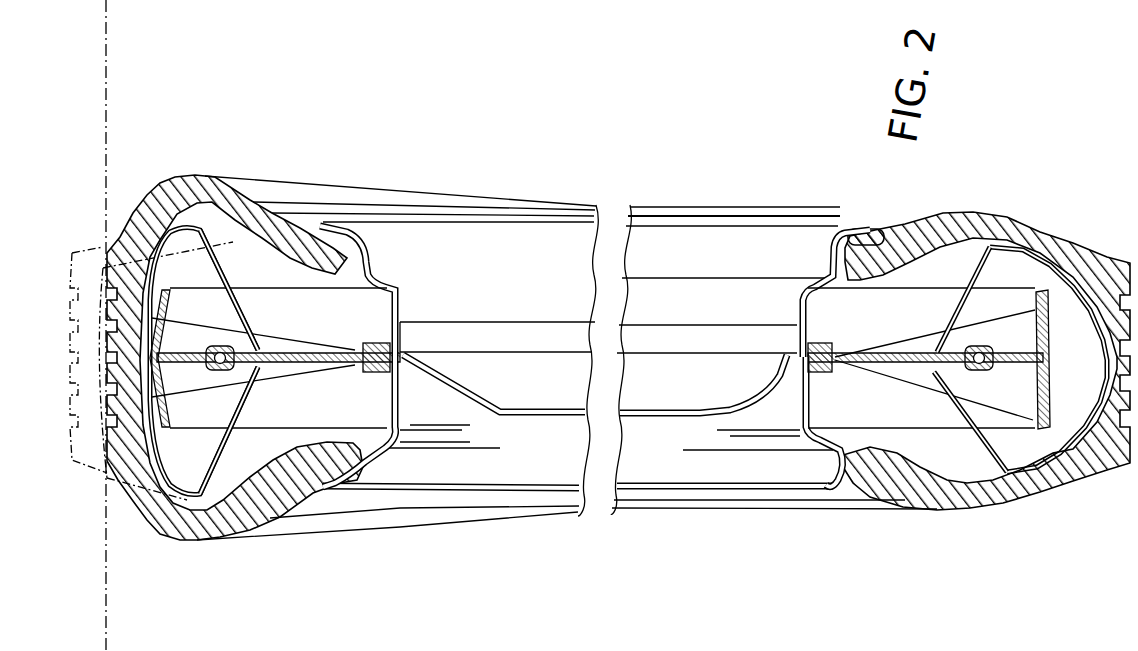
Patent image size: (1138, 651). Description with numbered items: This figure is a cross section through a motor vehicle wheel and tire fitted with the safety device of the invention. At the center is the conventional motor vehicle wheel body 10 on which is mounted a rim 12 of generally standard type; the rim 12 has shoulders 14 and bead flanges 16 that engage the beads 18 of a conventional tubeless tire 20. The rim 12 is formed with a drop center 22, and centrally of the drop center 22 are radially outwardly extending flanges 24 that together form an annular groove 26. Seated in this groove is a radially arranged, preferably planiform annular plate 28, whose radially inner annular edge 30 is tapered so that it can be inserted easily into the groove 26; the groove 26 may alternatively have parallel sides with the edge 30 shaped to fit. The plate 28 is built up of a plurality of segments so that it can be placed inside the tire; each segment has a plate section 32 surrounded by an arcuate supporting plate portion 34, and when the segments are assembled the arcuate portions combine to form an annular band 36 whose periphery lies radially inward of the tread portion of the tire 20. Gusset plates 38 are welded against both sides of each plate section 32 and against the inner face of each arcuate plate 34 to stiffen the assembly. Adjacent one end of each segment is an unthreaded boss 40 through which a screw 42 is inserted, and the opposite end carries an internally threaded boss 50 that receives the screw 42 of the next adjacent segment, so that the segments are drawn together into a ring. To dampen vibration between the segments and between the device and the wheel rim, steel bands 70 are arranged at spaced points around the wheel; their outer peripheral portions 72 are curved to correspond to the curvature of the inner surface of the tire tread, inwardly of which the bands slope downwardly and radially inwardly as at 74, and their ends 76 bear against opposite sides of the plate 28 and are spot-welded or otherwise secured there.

The motor vehicle wheel body 10 is at (716, 398).
The rim 12 is at (803, 395).
The shoulders 14 is at (824, 465).
The bead flanges 16 is at (873, 482).
The beads 18 is at (868, 240).
The tubeless tire 20 is at (1002, 503).
The drop center 22 is at (860, 372).
The flanges 24 is at (385, 332).
The annular groove 26 is at (388, 370).
The annular plate 28 is at (290, 372).
The radially inner annular edge 30 is at (358, 366).
The plate section 32 is at (328, 352).
The arcuate supporting plate portion 34 is at (160, 398).
The annular band 36 is at (1058, 342).
The gusset plates 38 is at (291, 343).
The boss 40 is at (210, 312).
The screw 42 is at (983, 367).
The boss 50 is at (980, 349).
The steel bands 70 is at (190, 483).
The outer peripheral portions 72 is at (1060, 363).
The sloping portions 74 is at (243, 300).
The ends 76 is at (923, 348).